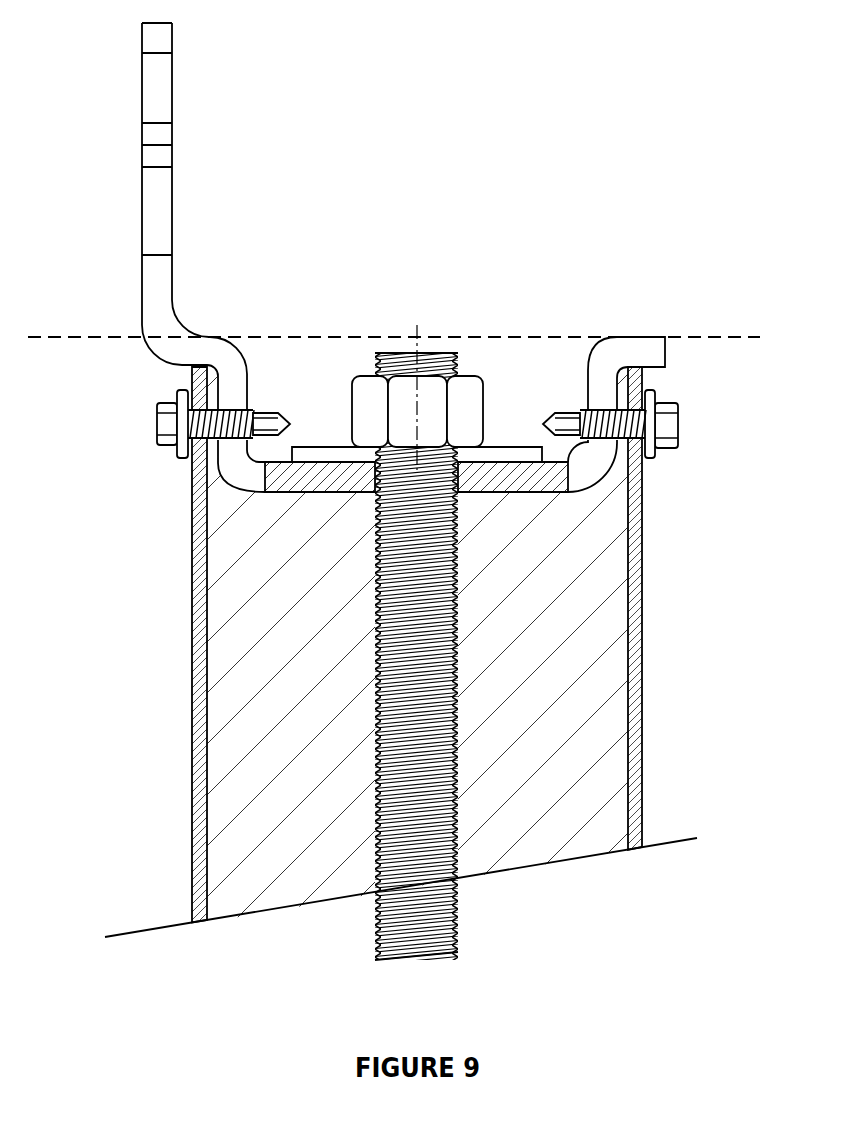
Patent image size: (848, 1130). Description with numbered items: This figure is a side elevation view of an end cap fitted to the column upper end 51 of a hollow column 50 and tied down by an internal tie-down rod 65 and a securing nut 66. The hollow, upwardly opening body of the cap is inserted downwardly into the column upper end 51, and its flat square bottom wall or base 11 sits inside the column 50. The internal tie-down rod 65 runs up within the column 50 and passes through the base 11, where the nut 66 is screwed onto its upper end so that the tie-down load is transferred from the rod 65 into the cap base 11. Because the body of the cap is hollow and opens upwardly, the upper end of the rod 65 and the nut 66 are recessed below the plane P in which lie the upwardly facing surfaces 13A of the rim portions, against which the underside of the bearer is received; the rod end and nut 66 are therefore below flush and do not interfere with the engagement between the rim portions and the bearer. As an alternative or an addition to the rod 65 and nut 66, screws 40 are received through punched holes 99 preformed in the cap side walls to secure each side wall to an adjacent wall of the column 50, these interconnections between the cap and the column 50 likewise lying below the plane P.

The upwardly facing surfaces 13A is at (185, 337).
The punched holes 99 is at (233, 410).
The nut 66 is at (466, 396).
The column upper end 51 is at (636, 378).
The screws 40 is at (643, 427).
The bottom wall 11 is at (503, 484).
The tie-down rod 65 is at (428, 668).
The column 50 is at (572, 790).
The plane P is at (85, 337).